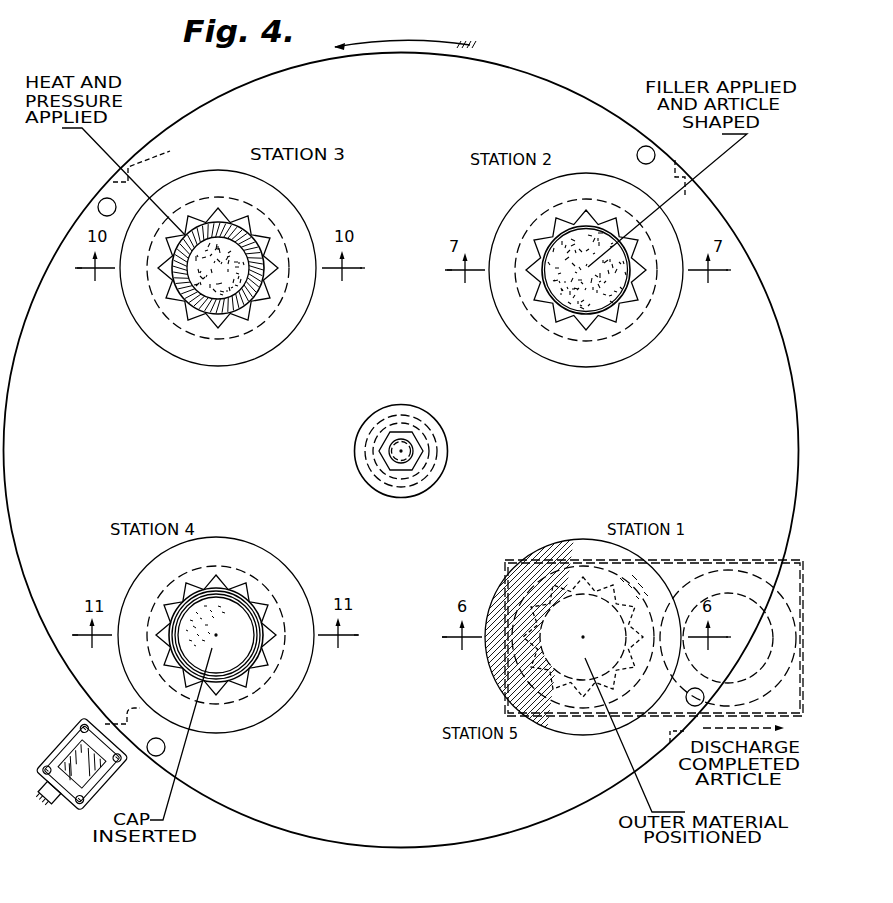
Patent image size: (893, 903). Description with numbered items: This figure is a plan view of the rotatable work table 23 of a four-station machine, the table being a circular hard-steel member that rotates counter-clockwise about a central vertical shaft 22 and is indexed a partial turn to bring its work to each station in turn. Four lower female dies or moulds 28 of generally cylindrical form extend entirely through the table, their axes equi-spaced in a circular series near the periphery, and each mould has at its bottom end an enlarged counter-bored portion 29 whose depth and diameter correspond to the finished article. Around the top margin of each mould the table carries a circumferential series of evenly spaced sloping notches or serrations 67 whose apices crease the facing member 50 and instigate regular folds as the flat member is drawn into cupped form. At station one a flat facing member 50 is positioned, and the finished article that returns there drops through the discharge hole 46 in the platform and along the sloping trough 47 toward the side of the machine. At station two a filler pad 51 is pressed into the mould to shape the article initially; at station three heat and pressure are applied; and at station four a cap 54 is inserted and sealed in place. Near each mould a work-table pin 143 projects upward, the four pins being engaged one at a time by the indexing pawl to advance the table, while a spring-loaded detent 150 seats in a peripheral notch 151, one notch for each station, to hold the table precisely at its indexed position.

The vertical shaft 22 is at (398, 453).
The work table 23 is at (513, 838).
The lower female die or mould 28 is at (243, 322).
The counter-bored portion 29 is at (273, 315).
The discharge hole 46 is at (593, 697).
The trough 47 is at (693, 557).
The facing member 50 is at (567, 552).
The filler pad 51 is at (210, 285).
The cap 54 is at (222, 663).
The notches or serrations 67 is at (270, 260).
The work-table pin 143 is at (98, 207).
The spring-loaded detent 150 is at (105, 723).
The notch 151 is at (404, 440).